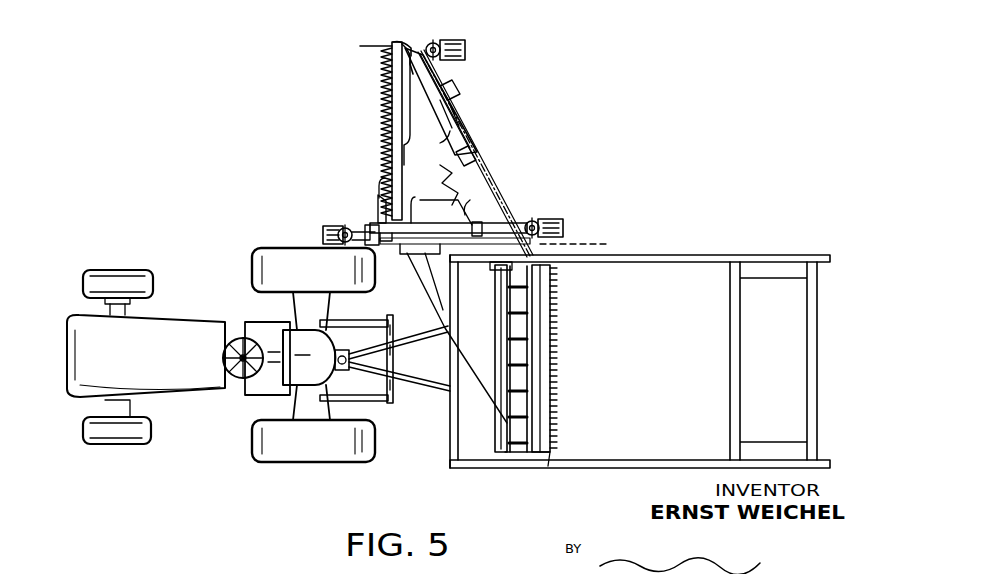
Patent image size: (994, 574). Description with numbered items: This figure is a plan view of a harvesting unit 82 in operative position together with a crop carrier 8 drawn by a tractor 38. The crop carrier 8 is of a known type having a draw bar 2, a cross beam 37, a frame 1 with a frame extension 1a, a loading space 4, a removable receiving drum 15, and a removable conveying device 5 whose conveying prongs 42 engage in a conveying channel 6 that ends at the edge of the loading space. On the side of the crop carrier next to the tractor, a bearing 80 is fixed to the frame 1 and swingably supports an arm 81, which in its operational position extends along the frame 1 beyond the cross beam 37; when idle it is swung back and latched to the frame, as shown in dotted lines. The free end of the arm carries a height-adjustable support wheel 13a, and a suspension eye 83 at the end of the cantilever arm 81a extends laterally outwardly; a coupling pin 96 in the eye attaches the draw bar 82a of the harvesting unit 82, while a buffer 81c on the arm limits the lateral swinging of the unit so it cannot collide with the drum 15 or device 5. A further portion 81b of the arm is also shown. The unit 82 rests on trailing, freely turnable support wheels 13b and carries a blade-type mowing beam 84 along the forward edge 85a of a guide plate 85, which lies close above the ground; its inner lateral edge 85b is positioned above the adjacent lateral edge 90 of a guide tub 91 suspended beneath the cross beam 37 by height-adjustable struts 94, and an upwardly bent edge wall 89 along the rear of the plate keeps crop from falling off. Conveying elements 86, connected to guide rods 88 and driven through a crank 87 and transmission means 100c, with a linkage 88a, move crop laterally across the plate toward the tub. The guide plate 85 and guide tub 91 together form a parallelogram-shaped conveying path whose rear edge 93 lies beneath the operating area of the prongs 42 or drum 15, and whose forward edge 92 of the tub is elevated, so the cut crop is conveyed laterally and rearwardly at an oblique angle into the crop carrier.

The frame 1 is at (624, 470).
The frame extension 1a is at (470, 469).
The draw bar 2 is at (410, 382).
The loading space 4 is at (668, 256).
The conveying device 5 is at (505, 327).
The conveying channel 6 is at (552, 341).
The crop carrier 8 is at (647, 385).
The support wheel 13a is at (325, 235).
The support wheels 13b is at (450, 42).
The receiving drum 15 is at (546, 466).
The cross beam 37 is at (455, 337).
The tractor 38 is at (173, 325).
The conveying prongs 42 is at (544, 359).
The bearing 80 is at (486, 236).
The arm 81 is at (445, 280).
The cantilever arm 81a is at (410, 258).
The support arm link 81b is at (410, 292).
The buffer 81c is at (462, 210).
The harvesting unit 82 is at (452, 72).
The draw bar 82a is at (378, 210).
The suspension eye 83 is at (372, 218).
The mowing beam 84 is at (388, 146).
The guide plate 85 is at (430, 168).
The forward edge 85a is at (378, 173).
The inner lateral edge 85b is at (487, 277).
The conveying elements 86 is at (414, 37).
The crank 87 is at (455, 95).
The guide rods 88 is at (442, 122).
The drive rod linkage 88a is at (462, 172).
The edge wall 89 is at (466, 128).
The lateral edge 90 is at (487, 358).
The guide tub 91 is at (390, 318).
The forward edge 92 is at (479, 393).
The rear edge 93 is at (528, 333).
The struts 94 is at (437, 329).
The coupling pin 96 is at (353, 250).
The power transmission means 100c is at (465, 112).